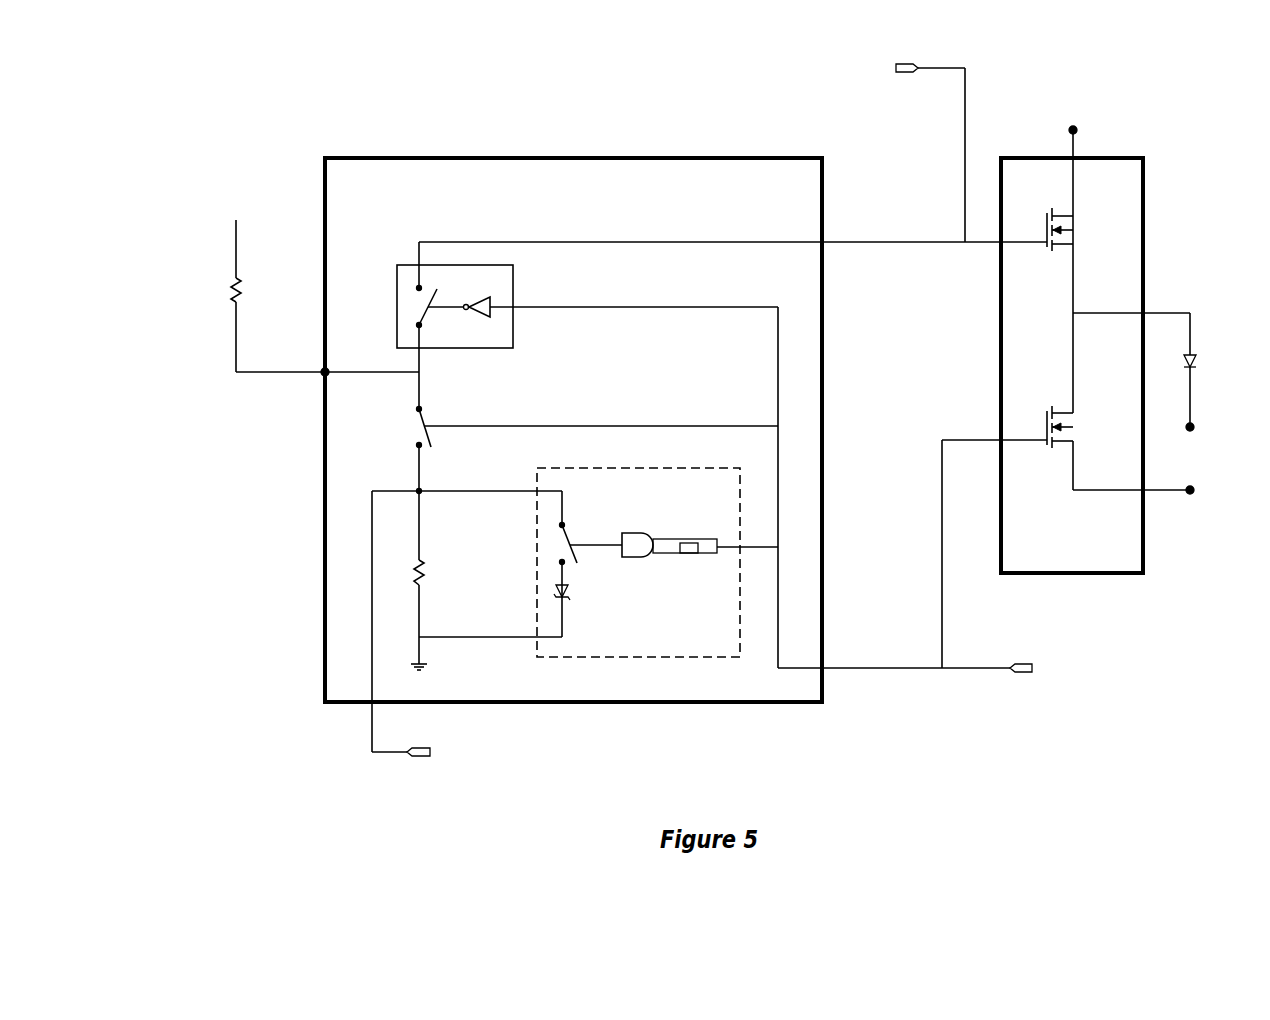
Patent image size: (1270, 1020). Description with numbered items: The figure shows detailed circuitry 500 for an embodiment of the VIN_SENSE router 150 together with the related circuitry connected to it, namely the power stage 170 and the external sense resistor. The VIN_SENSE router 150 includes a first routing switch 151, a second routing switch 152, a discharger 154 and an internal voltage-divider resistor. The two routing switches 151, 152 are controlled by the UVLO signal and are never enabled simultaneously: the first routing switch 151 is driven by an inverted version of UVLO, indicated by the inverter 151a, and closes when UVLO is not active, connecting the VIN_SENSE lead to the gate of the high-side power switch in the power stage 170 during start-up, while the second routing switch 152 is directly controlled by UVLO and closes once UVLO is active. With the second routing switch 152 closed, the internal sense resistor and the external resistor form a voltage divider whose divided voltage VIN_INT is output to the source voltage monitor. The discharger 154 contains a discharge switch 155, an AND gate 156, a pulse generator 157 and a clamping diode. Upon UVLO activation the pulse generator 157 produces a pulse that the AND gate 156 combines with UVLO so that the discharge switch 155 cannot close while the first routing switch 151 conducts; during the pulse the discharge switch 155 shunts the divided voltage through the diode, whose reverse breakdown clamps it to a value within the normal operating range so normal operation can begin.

The power supply circuit 500 is at (181, 86).
The VIN_SENSE router 150 is at (573, 418).
The first routing switch 151 is at (456, 325).
The inverter 151a is at (603, 298).
The second routing switch 152 is at (580, 449).
The discharger 154 is at (638, 550).
The discharge switch 155 is at (591, 528).
The AND gate 156 is at (638, 532).
The pulse generator 157 is at (715, 558).
The power stage 170 is at (1072, 354).